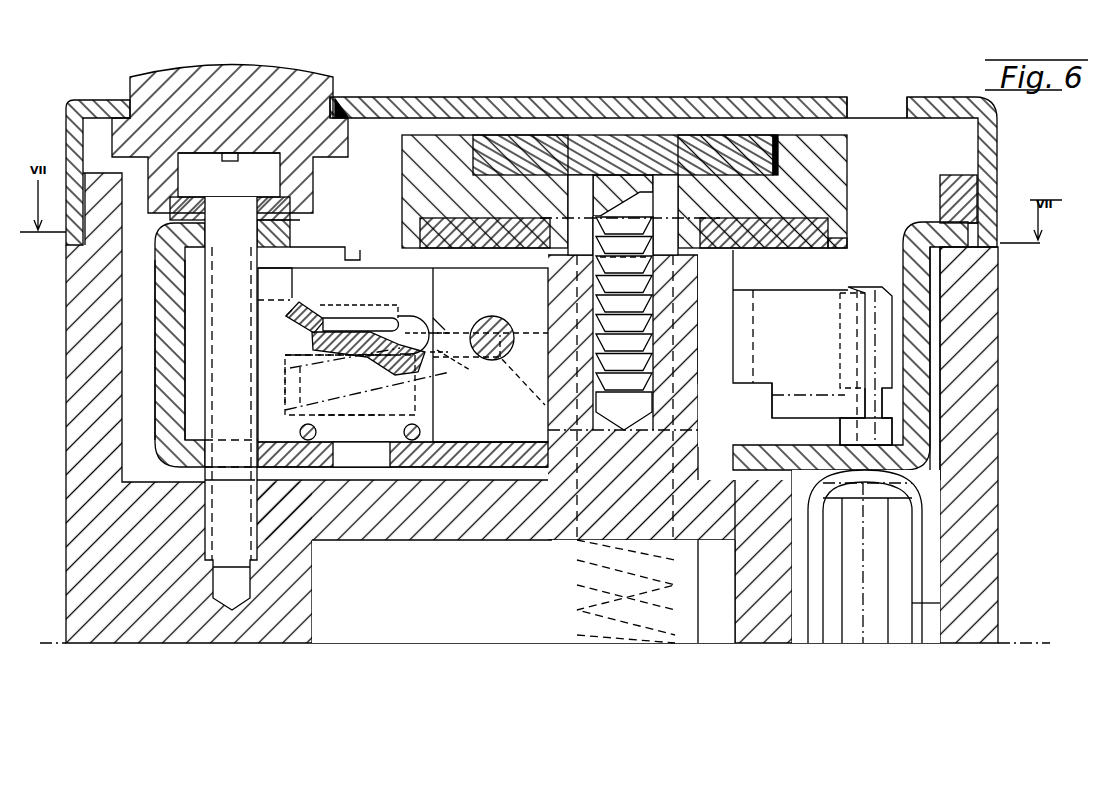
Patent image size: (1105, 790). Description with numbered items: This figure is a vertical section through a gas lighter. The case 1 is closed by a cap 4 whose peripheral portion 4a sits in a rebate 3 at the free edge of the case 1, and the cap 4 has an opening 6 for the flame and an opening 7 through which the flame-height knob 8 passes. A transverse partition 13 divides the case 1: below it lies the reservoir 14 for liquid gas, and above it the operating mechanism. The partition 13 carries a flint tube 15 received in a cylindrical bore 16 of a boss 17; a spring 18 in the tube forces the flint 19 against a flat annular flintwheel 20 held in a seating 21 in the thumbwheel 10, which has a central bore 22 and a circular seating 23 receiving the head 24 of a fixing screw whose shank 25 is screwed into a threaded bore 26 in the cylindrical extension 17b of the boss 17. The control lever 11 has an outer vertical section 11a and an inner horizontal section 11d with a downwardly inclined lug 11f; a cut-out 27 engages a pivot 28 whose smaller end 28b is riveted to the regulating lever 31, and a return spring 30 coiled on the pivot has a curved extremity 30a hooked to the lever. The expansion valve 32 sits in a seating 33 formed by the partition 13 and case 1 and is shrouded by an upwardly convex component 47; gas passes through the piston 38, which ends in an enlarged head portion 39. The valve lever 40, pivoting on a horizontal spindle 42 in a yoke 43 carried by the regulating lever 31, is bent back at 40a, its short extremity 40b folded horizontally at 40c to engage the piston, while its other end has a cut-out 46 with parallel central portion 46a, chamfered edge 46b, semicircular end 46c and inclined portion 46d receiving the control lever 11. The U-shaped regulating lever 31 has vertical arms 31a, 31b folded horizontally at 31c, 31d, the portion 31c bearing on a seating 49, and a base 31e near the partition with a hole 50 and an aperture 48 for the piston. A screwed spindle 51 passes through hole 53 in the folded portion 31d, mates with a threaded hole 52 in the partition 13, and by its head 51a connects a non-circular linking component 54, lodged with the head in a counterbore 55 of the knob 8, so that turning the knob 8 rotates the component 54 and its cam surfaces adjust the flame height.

The case 1 is at (77, 302).
The rebate 3 is at (85, 210).
The cap 4 is at (441, 98).
The peripheral portion of the cap 4a is at (76, 108).
The circular opening 6 is at (870, 100).
The circular opening 7 is at (340, 100).
The knob 8 is at (186, 90).
The thumbwheel 10 is at (818, 173).
The control lever 11 is at (372, 325).
The first vertical section 11a is at (292, 322).
The second horizontal section 11d is at (462, 380).
The lug 11f is at (436, 321).
The transverse partition 13 is at (350, 540).
The reservoir 14 is at (432, 591).
The flint tube 15 is at (562, 568).
The cylindrical bore 16 is at (680, 437).
The boss 17 is at (700, 395).
The cylindrical extension of the boss 17b is at (690, 270).
The spring 18 is at (563, 607).
The flint 19 is at (698, 562).
The flintwheel 20 is at (786, 242).
The seating 21 is at (840, 238).
The bore 22 is at (740, 194).
The circular seating 23 is at (778, 145).
The head of fixing screw 24 is at (690, 150).
The shank of fixing screw 25 is at (623, 331).
The threaded bore 26 is at (650, 356).
The cut-out 27 is at (490, 369).
The pivot 28 is at (299, 430).
The end of smaller diameter 28b is at (361, 454).
The return spring 30 is at (422, 430).
The curved extremity of return spring 30a is at (503, 300).
The regulating lever 31 is at (475, 470).
The vertical arm 31a is at (915, 283).
The vertical arm 31b is at (167, 279).
The folded portion 31c is at (923, 227).
The folded portion 31d is at (290, 238).
The base of the U-section 31e is at (414, 470).
The expansion valve 32 is at (940, 603).
The seating 33 is at (930, 548).
The piston 38 is at (883, 398).
The enlarged head portion 39 is at (883, 325).
The valve lever 40 is at (812, 288).
The bent-back portion 40a is at (758, 331).
The shortest extremity 40b is at (794, 385).
The horizontally folded portion 40c is at (808, 396).
The horizontal spindle 42 is at (480, 332).
The vertical yoke 43 is at (490, 432).
The cut-out 46 is at (320, 313).
The central portion of cut-out 46a is at (358, 313).
The chamfered edge 46b is at (290, 302).
The semicircular closed end 46c is at (407, 317).
The inclined portion 46d is at (385, 367).
The shroud component 47 is at (877, 493).
The aperture 48 is at (930, 442).
The seating 49 is at (973, 235).
The hole 50 is at (205, 462).
The screwed spindle 51 is at (231, 403).
The head of spindle 51a is at (229, 175).
The threaded hole 52 is at (222, 588).
The hole 53 is at (207, 225).
The linking component 54 is at (160, 232).
The counterbore 55 is at (256, 153).